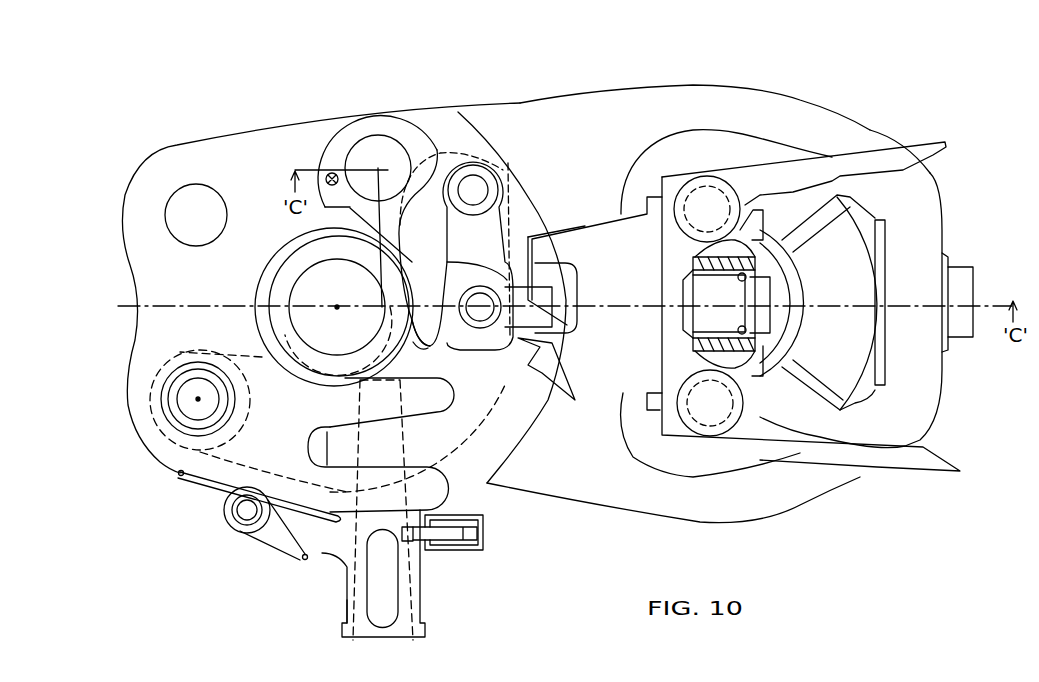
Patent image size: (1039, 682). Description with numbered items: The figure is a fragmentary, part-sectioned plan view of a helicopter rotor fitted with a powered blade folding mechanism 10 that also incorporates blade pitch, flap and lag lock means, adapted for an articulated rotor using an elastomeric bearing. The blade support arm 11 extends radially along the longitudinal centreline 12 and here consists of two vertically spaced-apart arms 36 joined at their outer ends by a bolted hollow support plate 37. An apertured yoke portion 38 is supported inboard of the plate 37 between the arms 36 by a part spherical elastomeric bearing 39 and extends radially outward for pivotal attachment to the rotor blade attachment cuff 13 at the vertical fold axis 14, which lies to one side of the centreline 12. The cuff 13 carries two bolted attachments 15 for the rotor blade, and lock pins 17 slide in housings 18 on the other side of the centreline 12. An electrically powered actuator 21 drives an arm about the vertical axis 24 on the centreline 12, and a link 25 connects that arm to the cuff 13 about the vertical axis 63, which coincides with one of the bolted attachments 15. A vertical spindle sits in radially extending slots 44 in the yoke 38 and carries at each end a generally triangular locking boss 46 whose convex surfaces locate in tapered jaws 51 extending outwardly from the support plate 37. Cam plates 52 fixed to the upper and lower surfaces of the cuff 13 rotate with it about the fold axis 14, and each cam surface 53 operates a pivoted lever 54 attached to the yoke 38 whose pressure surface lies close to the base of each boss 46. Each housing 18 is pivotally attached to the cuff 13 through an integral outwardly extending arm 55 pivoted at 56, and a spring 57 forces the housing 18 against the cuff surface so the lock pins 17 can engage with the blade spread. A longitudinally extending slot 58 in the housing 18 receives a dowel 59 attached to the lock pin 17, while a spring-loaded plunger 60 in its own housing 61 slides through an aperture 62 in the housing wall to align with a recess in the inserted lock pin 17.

The blade folding mechanism 10 is at (432, 64).
The blade support arm 11 is at (873, 76).
The longitudinal centreline 12 is at (133, 308).
The rotor blade attachment cuff 13 is at (210, 165).
The vertical fold axis 14 is at (378, 168).
The bolted attachments 15 is at (170, 402).
The lock pins 17 is at (408, 453).
The housings 18 is at (417, 610).
The electrically powered actuator 21 is at (282, 278).
The vertical axis 24 is at (337, 307).
The link 25 is at (477, 413).
The arms 36 is at (950, 150).
The hollow support plate 37 is at (705, 243).
The apertured yoke portion 38 is at (878, 128).
The part spherical elastomeric bearing 39 is at (848, 245).
The radially extending slots 44 is at (518, 167).
The triangular locking boss 46 is at (473, 267).
The tapered jaws 51 is at (545, 328).
The cam plates 52 is at (378, 118).
The cam surface 53 is at (425, 122).
The pivoted lever 54 is at (418, 340).
The arm 55 is at (325, 548).
The pivotal attachment 56 is at (247, 510).
The spring 57 is at (183, 473).
The longitudinally extending slot 58 is at (398, 620).
The dowel 59 is at (378, 552).
The spring-loaded plunger 60 is at (482, 537).
The housing 61 is at (487, 530).
The aperture 62 is at (421, 550).
The vertical axis 63 is at (198, 399).